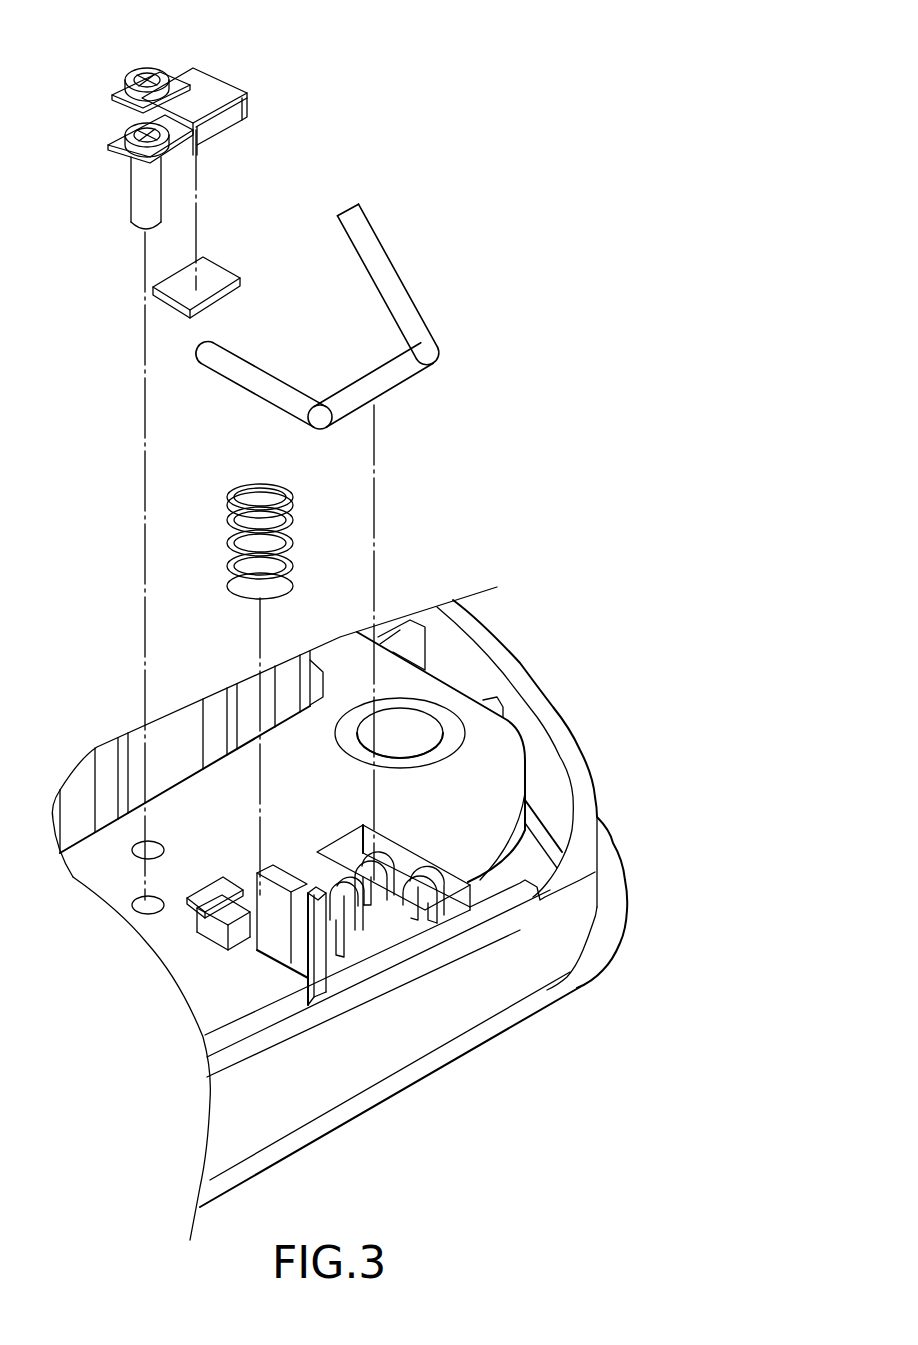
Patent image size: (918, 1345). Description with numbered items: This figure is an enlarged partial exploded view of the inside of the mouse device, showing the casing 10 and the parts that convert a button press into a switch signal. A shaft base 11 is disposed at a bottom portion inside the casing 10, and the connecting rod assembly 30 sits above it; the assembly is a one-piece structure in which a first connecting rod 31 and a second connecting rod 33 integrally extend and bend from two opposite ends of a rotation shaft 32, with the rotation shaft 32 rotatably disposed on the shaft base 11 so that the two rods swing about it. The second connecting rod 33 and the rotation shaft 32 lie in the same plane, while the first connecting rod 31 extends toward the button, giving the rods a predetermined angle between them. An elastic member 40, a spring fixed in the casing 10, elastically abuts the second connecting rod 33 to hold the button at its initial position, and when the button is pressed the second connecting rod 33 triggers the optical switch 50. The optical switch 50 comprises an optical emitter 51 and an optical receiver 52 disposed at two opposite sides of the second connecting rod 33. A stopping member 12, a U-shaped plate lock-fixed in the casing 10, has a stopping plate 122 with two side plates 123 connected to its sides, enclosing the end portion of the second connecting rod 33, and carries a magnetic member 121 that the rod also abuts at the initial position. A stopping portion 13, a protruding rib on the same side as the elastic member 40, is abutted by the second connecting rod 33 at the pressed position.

The casing 10 is at (510, 957).
The shaft base 11 is at (393, 940).
The stopping member 12 is at (193, 120).
The magnetic member 121 is at (222, 268).
The stopping plate 122 is at (203, 95).
The side plates 123 is at (125, 118).
The stopping portion 13 is at (210, 880).
The connecting rod assembly 30 is at (343, 297).
The first connecting rod 31 is at (392, 280).
The rotation shaft 32 is at (388, 386).
The second connecting rod 33 is at (235, 378).
The elastic member 40 is at (293, 518).
The optical switch 50 is at (145, 944).
The optical emitter 51 is at (200, 920).
The optical receiver 52 is at (227, 895).